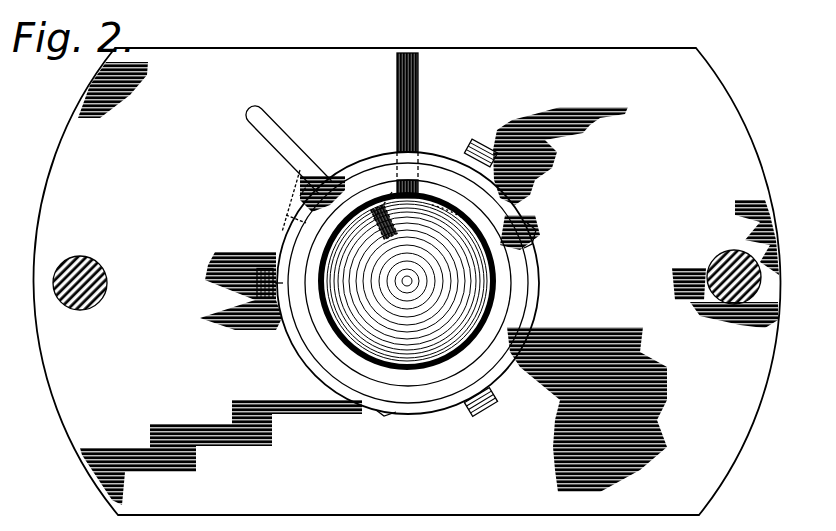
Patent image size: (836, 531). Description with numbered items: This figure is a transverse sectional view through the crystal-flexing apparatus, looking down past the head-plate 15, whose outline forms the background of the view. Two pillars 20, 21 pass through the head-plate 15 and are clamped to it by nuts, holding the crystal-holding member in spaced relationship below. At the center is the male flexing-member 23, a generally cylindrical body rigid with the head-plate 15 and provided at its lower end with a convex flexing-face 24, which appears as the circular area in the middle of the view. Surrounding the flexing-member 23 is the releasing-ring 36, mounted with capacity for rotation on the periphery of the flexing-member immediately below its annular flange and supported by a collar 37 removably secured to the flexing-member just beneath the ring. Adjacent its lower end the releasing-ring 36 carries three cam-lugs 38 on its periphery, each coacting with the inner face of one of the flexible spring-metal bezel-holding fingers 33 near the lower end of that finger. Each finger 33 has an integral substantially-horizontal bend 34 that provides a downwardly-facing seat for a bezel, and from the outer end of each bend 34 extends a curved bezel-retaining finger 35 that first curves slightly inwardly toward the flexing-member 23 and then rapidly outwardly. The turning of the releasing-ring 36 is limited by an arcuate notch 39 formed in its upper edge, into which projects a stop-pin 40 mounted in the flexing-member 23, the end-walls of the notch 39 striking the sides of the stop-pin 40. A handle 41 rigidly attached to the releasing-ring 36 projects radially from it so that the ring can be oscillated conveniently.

The head-plate 15 is at (581, 47).
The pillar 20 is at (80, 266).
The pillar 21 is at (724, 256).
The male flexing-member 23 is at (498, 296).
The convex flexing-face 24 is at (406, 278).
The bezel-holding finger 33 is at (468, 165).
The bend 34 is at (282, 283).
The bezel-retaining finger 35 is at (256, 282).
The releasing-ring 36 is at (295, 354).
The collar 37 is at (512, 311).
The cam-lug 38 is at (296, 206).
The arcuate notch 39 is at (450, 200).
The stop-pin 40 is at (394, 192).
The handle 41 is at (397, 82).